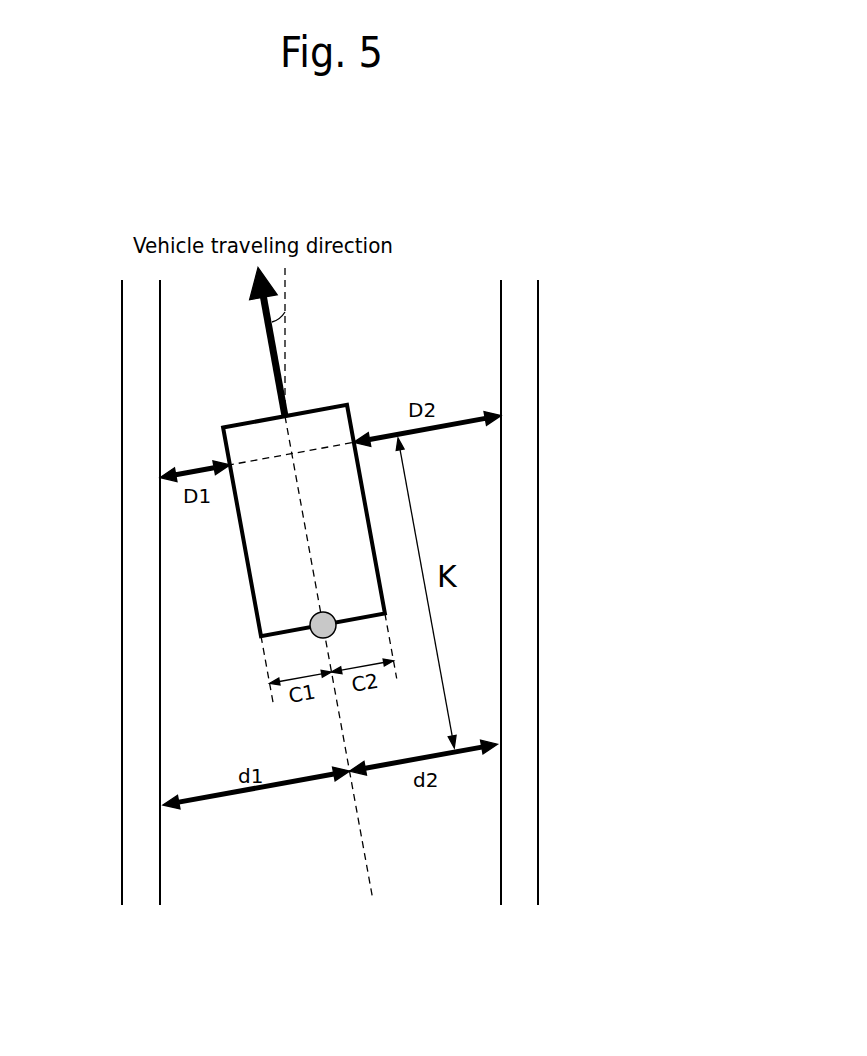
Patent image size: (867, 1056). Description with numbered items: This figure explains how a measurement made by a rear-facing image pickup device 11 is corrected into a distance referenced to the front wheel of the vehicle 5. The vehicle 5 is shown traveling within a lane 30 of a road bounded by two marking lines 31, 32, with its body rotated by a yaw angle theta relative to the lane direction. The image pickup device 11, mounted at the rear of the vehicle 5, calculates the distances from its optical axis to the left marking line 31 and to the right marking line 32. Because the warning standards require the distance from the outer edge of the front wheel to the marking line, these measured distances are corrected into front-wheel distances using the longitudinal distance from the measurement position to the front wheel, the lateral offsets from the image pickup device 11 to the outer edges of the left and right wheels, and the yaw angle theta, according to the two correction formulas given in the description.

The vehicle 5 is at (347, 406).
The image pickup device 11 is at (310, 626).
The lane 30 is at (338, 558).
The marking line 31 is at (122, 337).
The marking line 32 is at (538, 331).